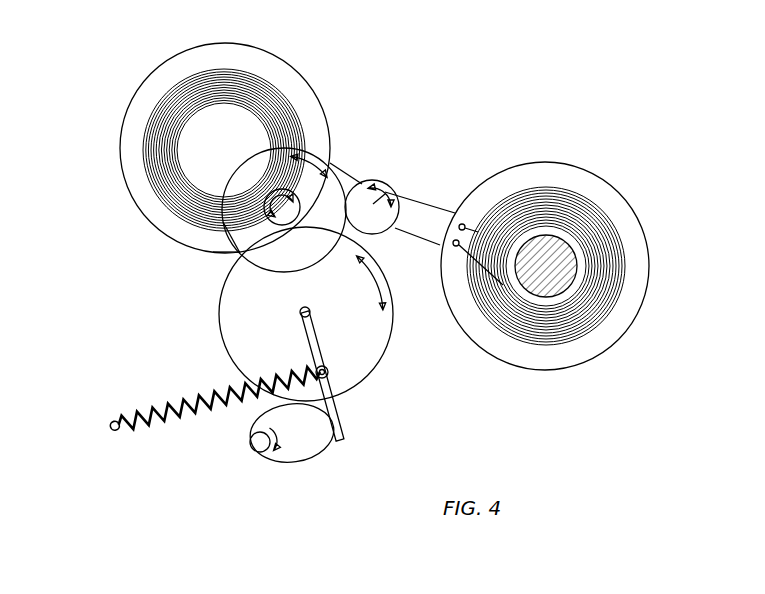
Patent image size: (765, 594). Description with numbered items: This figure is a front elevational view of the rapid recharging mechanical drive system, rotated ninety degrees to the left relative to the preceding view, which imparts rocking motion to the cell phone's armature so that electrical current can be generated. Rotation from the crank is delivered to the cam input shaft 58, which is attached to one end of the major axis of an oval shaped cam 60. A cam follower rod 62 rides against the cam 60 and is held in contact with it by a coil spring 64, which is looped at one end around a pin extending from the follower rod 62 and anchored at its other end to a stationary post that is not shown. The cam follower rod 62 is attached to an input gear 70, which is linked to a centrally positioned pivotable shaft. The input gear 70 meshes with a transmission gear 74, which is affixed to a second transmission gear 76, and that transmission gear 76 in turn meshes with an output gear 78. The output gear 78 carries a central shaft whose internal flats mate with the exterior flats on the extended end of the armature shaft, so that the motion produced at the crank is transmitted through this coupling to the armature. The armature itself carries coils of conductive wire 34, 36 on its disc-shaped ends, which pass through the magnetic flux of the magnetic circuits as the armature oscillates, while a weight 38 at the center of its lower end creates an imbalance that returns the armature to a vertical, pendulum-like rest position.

The coil of conductive wire 34 is at (175, 92).
The coil of conductive wire 36 is at (577, 205).
The weight 38 is at (538, 252).
The transmission gear 74 is at (288, 190).
The output gear 78 is at (388, 188).
The input gear 70 is at (388, 350).
The transmission gear 76 is at (240, 230).
The cam follower rod 62 is at (342, 418).
The coil spring 64 is at (180, 395).
The oval shaped cam 60 is at (293, 463).
The cam input shaft 58 is at (253, 445).